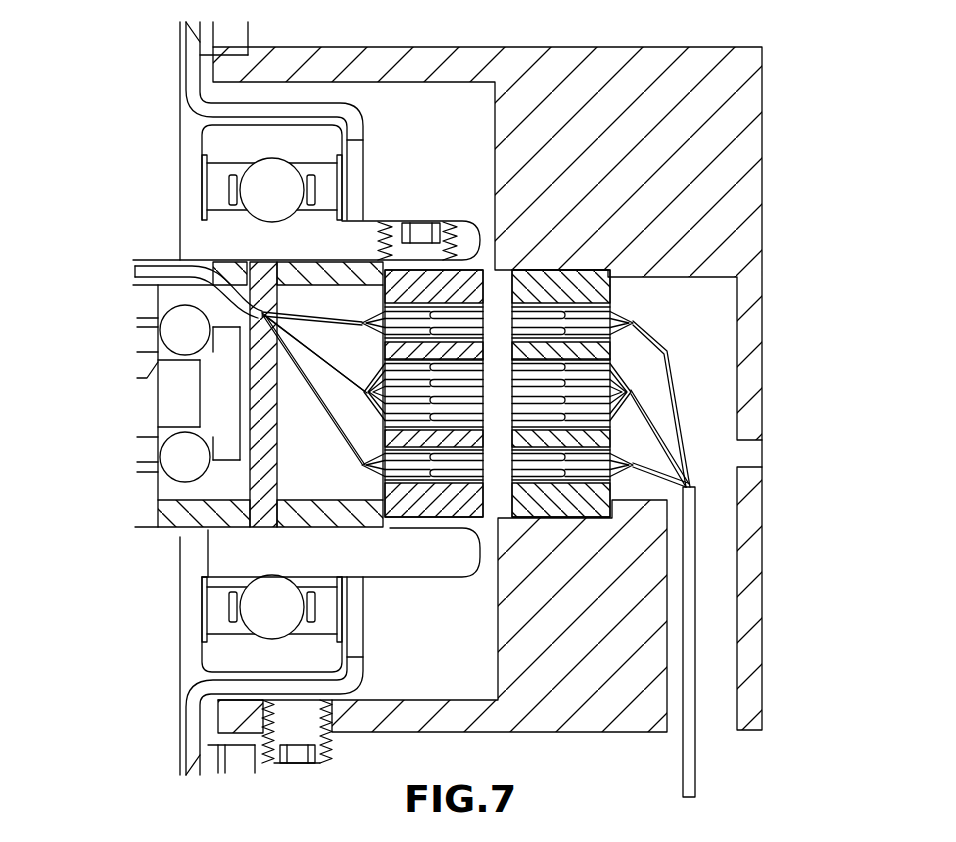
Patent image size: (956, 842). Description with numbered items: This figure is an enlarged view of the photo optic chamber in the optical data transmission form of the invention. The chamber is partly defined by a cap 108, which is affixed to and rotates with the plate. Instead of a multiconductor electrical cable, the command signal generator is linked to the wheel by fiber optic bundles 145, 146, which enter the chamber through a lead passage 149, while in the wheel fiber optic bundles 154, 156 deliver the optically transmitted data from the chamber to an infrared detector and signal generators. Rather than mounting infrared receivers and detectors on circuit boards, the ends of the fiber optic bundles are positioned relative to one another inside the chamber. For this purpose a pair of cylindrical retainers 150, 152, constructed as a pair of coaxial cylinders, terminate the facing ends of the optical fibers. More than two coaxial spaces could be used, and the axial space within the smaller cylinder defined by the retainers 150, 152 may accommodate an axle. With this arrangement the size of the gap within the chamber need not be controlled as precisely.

The cap 108 is at (733, 216).
The fiber optic bundle 145 is at (366, 392).
The fiber optic bundle 146 is at (362, 323).
The lead conduit 149 is at (133, 277).
The cylindrical retainer 150 is at (395, 505).
The cylindrical retainer 152 is at (607, 289).
The fiber optic bundle 154 is at (627, 390).
The fiber optic bundle 156 is at (680, 415).